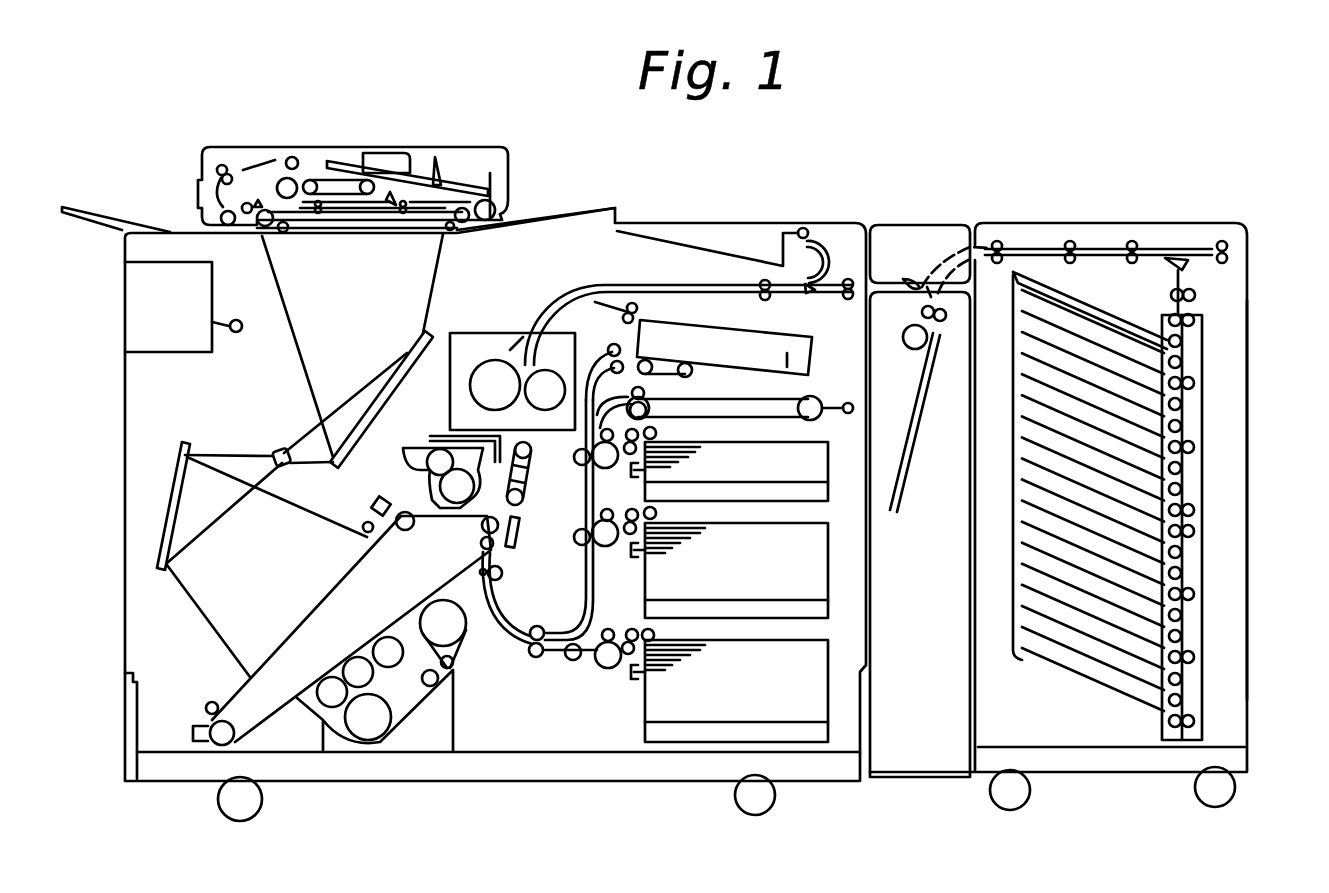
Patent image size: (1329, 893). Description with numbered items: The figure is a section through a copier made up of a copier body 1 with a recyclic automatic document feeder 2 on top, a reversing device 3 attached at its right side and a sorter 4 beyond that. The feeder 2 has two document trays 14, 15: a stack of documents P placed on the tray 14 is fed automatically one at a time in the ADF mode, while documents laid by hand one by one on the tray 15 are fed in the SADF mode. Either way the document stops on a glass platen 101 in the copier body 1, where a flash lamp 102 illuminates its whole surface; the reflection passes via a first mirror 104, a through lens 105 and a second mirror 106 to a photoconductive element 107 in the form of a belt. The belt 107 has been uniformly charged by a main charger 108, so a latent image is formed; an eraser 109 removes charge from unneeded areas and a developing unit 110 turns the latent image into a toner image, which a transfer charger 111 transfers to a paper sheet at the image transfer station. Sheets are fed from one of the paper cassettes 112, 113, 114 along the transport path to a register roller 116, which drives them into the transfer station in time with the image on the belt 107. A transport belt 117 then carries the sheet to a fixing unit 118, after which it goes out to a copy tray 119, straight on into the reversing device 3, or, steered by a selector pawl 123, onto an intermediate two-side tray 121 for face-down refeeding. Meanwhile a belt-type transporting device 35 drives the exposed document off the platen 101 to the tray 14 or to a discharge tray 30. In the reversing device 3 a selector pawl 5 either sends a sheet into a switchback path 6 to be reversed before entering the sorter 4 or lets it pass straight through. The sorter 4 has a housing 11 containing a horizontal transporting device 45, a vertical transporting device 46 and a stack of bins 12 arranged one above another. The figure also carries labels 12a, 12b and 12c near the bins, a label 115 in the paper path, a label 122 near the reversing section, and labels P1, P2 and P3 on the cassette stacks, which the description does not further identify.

The copier body 1 is at (645, 197).
The recyclic automatic document feeder 2 is at (455, 135).
The reversing device 3 is at (906, 218).
The sorter 4 is at (1108, 212).
The selector pawl 5 is at (915, 284).
The switchback path 6 is at (915, 427).
The housing 11 is at (1246, 444).
The bins 12 is at (1007, 460).
The sheet guide path 12a is at (1033, 282).
The upper bin guide 12b is at (1013, 274).
The lower bin guide 12c is at (1022, 316).
The document tray 14 is at (478, 185).
The document tray 15 is at (560, 208).
The discharge tray 30 is at (147, 222).
The transporting device 35 is at (393, 195).
The horizontal transporting device 45 is at (1150, 240).
The vertical transporting device 46 is at (1200, 492).
The glass platen 101 is at (330, 238).
The flash lamp 102 is at (239, 333).
The first mirror 104 is at (372, 424).
The through lens 105 is at (278, 450).
The second mirror 106 is at (170, 460).
The photoconductive element 107 is at (317, 607).
The main charger 108 is at (372, 503).
The eraser 109 is at (198, 722).
The developing unit 110 is at (410, 715).
The transfer charger 111 is at (518, 545).
The paper cassette 112 is at (840, 493).
The paper cassette 113 is at (840, 606).
The paper cassette 114 is at (838, 724).
The registration rollers 115 is at (513, 636).
The register roller 116 is at (503, 578).
The transport belt 117 is at (528, 485).
The fixing unit 118 is at (488, 330).
The copy tray 119 is at (706, 253).
The intermediate tray 121 is at (777, 374).
The sheet reversing path 122 is at (818, 289).
The selector pawl 123 is at (625, 298).
The documents P is at (350, 164).
The first paper cassette P1 is at (730, 448).
The second paper cassette P2 is at (750, 525).
The third paper cassette P3 is at (757, 644).